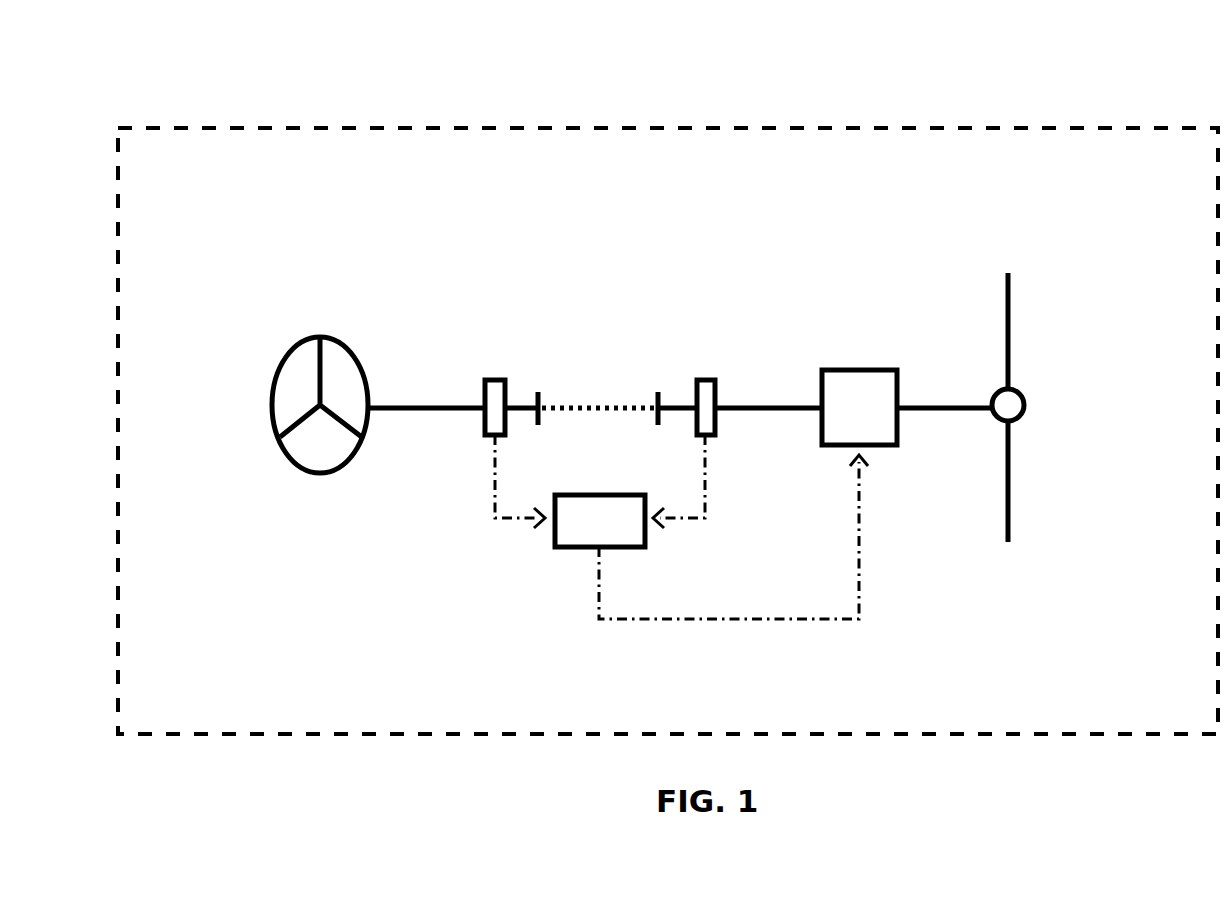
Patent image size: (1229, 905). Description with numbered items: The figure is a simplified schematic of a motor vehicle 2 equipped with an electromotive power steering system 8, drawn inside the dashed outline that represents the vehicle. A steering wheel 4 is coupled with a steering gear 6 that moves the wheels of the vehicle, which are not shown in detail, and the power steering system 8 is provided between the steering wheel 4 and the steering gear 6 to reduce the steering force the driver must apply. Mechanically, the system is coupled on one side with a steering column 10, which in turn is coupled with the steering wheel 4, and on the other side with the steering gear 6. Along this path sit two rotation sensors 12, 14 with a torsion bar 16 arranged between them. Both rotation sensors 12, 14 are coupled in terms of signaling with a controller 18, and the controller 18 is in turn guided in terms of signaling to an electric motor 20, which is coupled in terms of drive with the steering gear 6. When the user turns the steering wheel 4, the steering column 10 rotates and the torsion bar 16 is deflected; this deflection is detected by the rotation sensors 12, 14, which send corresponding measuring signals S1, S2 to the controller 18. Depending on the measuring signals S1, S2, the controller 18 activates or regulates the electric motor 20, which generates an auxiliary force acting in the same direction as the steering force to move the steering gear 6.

The motor vehicle 2 is at (1100, 128).
The steering wheel 4 is at (300, 340).
The steering gear 6 is at (1019, 396).
The electromotive power steering system 8 is at (778, 320).
The steering column 10 is at (415, 407).
The rotation sensor 12 is at (499, 380).
The rotation sensor 14 is at (703, 380).
The torsion bar 16 is at (600, 407).
The controller 18 is at (565, 545).
The electric motor 20 is at (855, 370).
The measuring signal S1 is at (493, 468).
The measuring signal S2 is at (705, 468).